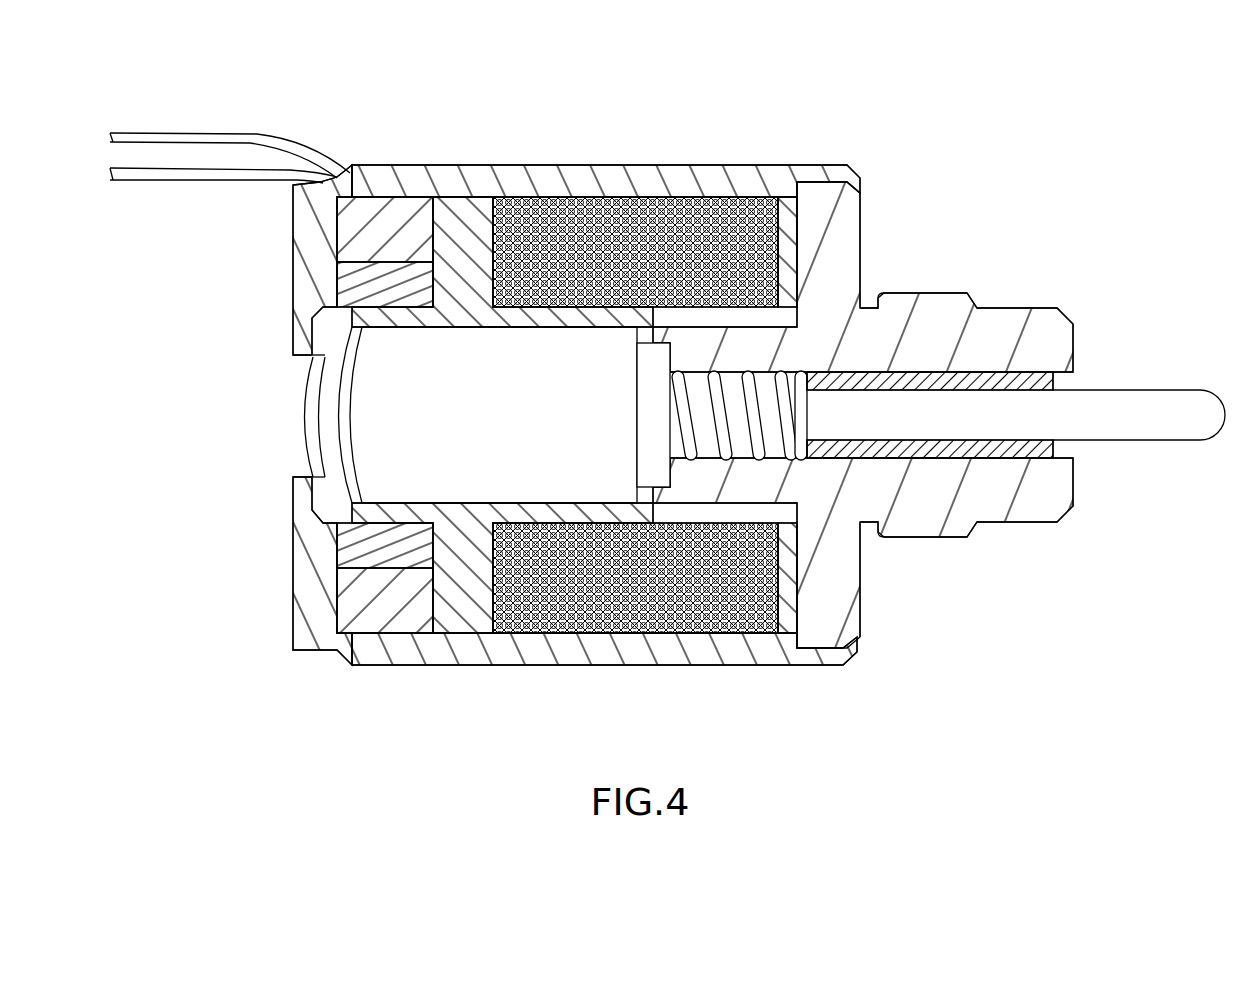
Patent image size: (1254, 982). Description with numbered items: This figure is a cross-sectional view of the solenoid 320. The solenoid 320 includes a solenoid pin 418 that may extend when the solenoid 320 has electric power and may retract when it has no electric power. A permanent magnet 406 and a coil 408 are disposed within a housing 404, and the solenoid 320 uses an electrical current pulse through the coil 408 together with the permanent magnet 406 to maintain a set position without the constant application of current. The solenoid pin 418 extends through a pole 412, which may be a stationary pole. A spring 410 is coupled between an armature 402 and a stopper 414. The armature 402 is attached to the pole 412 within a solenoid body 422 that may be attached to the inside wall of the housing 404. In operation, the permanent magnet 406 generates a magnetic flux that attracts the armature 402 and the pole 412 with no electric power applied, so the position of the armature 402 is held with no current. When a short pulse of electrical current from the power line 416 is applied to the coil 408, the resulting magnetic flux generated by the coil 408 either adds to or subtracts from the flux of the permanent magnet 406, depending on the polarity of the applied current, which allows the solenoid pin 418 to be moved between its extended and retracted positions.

The solenoid 320 is at (908, 150).
The armature 402 is at (464, 415).
The housing 404 is at (742, 183).
The permanent magnet 406 is at (380, 612).
The coil 408 is at (640, 585).
The spring 410 is at (753, 403).
The pole 412 is at (957, 497).
The stopper 414 is at (1005, 378).
The power line 416 is at (205, 135).
The solenoid pin 418 is at (1152, 428).
The solenoid body 422 is at (474, 213).